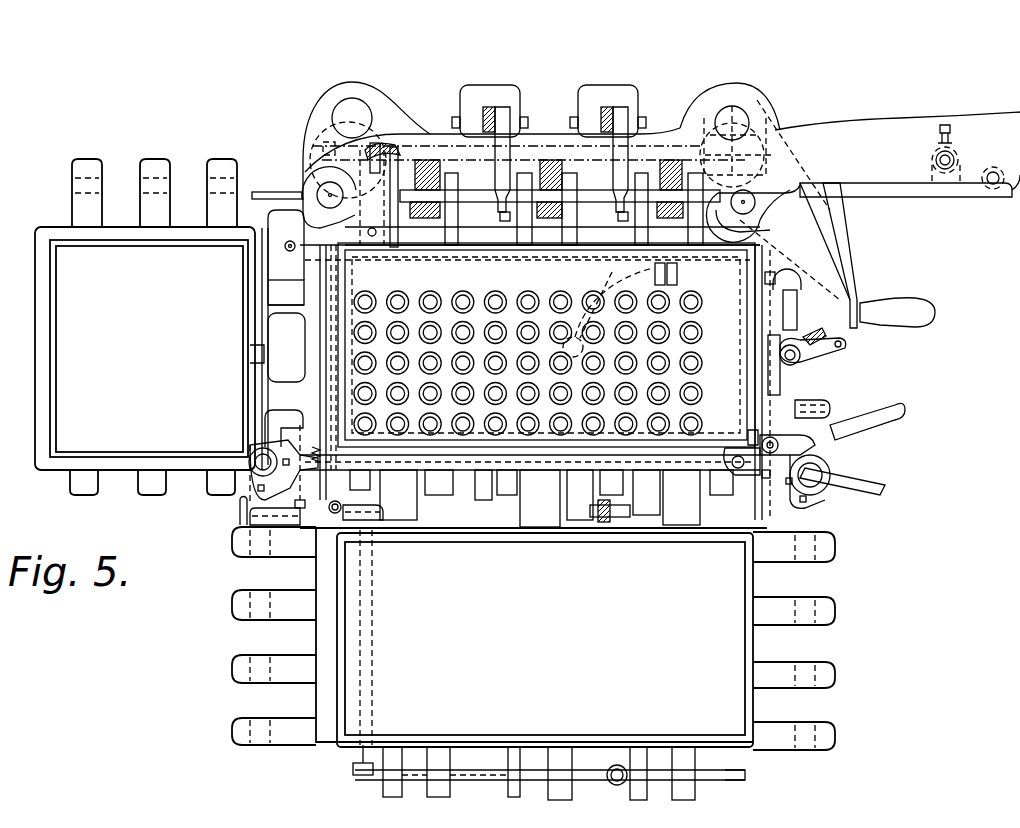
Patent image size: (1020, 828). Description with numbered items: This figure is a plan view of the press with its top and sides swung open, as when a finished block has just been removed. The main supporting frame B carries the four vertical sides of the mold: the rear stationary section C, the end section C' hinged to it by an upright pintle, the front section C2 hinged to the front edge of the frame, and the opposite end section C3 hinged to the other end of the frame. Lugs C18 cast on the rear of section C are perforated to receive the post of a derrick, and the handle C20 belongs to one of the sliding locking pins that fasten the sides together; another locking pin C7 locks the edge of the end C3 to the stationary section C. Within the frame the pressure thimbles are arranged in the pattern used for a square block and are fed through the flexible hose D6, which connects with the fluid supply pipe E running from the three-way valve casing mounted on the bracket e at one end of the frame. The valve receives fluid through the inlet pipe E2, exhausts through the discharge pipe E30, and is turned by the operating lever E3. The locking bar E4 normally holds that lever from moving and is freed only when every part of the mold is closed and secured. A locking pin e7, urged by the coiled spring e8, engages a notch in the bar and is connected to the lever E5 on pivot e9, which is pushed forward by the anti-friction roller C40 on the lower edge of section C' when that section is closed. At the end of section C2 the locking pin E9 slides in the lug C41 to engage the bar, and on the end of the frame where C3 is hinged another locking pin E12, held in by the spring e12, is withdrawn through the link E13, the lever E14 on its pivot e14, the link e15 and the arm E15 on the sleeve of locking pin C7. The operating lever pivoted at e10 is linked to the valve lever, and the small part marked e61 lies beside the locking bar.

The end section of mold C3 is at (172, 358).
The handle C20 is at (270, 191).
The lever E14 is at (766, 478).
The pivot e14 is at (291, 241).
The link E13 is at (320, 300).
The main supporting frame B is at (306, 355).
The flexible pipe or hose D6 is at (594, 284).
The rear stationary side of mold C is at (530, 162).
The lugs C18 is at (340, 95).
The locking pin C7 is at (324, 188).
The arm E15 is at (370, 159).
The link e15 is at (372, 228).
The end section of mold C' is at (869, 154).
The anti-friction roller C40 is at (995, 155).
The bracket e is at (782, 299).
The fluid supply pipe E is at (840, 292).
The discharge pipe E30 is at (860, 308).
The operating lever E3 is at (840, 345).
The inlet or supply pipe E2 is at (790, 386).
The lever E5 is at (812, 403).
The locking bar E4 is at (888, 412).
The pivot e9 is at (780, 446).
The locking pin e7 is at (752, 436).
The coiled spring e8 is at (742, 455).
The pivot e10 is at (822, 482).
The pin e61 is at (777, 482).
The locking pin E12 is at (304, 468).
The spring e12 is at (318, 450).
The lug C41 is at (308, 522).
The locking pin E9 is at (336, 514).
The front side of mold C2 is at (565, 638).